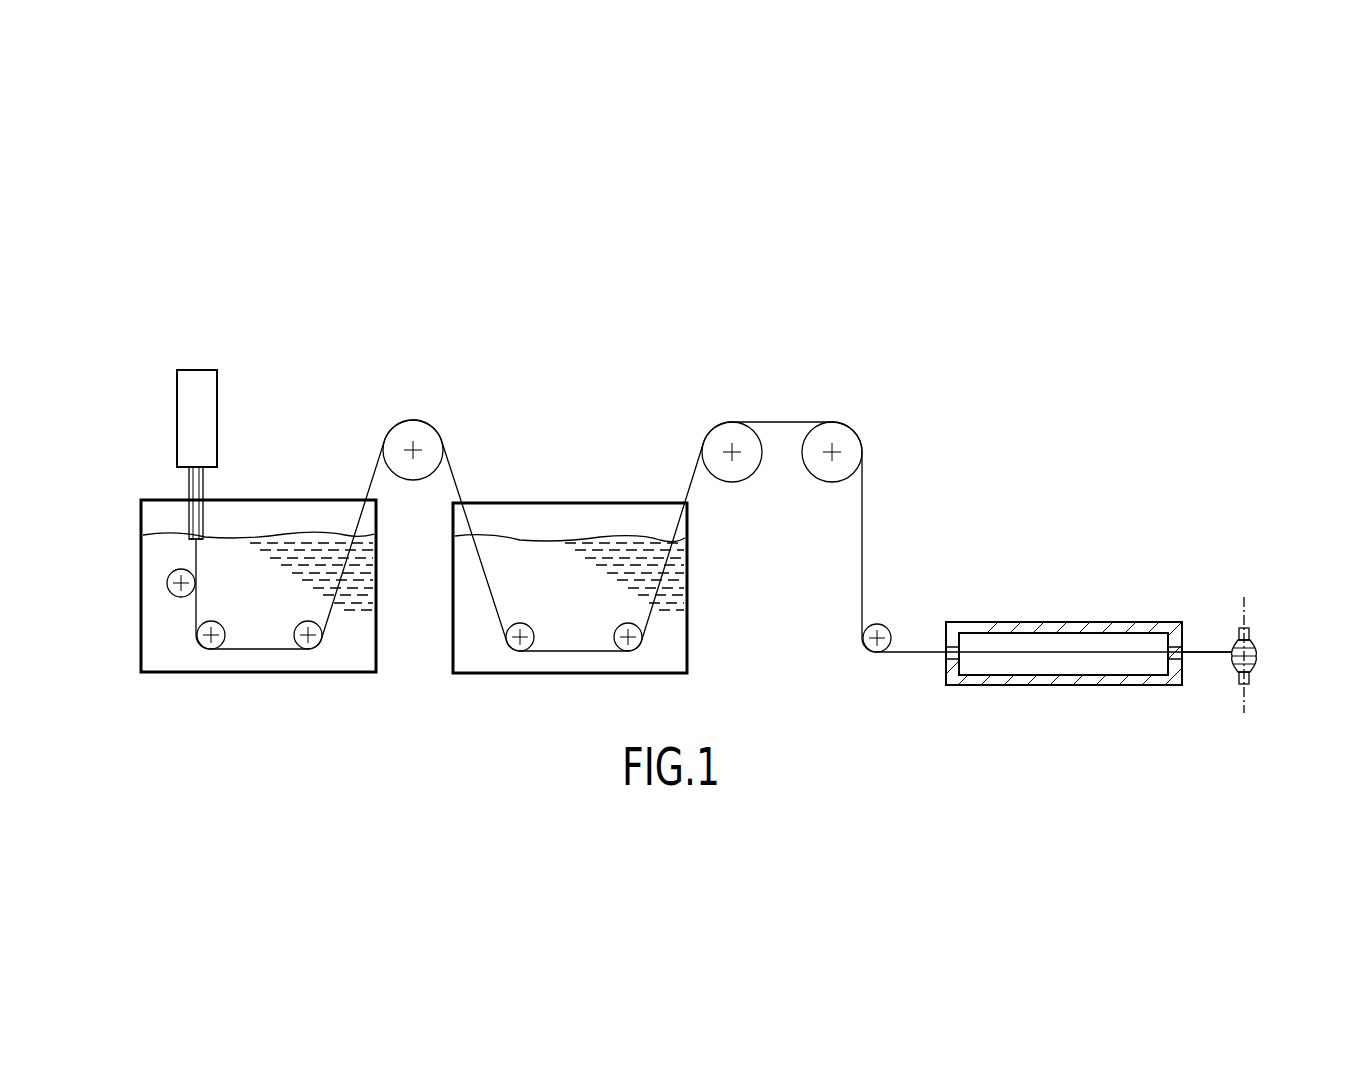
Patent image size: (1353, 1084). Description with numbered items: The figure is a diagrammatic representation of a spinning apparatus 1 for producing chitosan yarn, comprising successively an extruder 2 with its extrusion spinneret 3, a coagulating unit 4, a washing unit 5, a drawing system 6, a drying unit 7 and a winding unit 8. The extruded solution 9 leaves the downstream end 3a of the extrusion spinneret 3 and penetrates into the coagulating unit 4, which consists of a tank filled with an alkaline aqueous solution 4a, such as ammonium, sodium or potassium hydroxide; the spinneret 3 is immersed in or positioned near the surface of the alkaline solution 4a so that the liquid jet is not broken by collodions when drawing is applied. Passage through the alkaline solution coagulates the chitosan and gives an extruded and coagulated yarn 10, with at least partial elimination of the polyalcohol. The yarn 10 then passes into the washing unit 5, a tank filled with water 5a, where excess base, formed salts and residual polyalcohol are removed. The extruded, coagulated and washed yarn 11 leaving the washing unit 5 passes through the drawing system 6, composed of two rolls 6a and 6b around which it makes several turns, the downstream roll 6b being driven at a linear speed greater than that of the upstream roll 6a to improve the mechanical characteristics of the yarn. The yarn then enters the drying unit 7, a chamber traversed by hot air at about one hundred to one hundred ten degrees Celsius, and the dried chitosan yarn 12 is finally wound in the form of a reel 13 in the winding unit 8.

The apparatus 1 is at (428, 290).
The extruder 2 is at (177, 412).
The extrusion spinneret 3 is at (189, 487).
The downstream end 3a is at (199, 540).
The coagulating unit 4 is at (141, 630).
The alkaline aqueous solution 4a is at (262, 545).
The washing unit 5 is at (692, 638).
The water 5a is at (552, 545).
The drawing system 6 is at (775, 368).
The upstream roll 6a is at (724, 436).
The downstream roll 6b is at (839, 436).
The drying unit 7 is at (1045, 618).
The winding unit 8 is at (1233, 674).
The extruded solution 9 is at (192, 559).
The extruded and coagulated yarn 10 is at (383, 460).
The extruded, coagulated and washed yarn 11 is at (692, 468).
The chitosan yarn 12 is at (1199, 650).
The reel 13 is at (1257, 650).